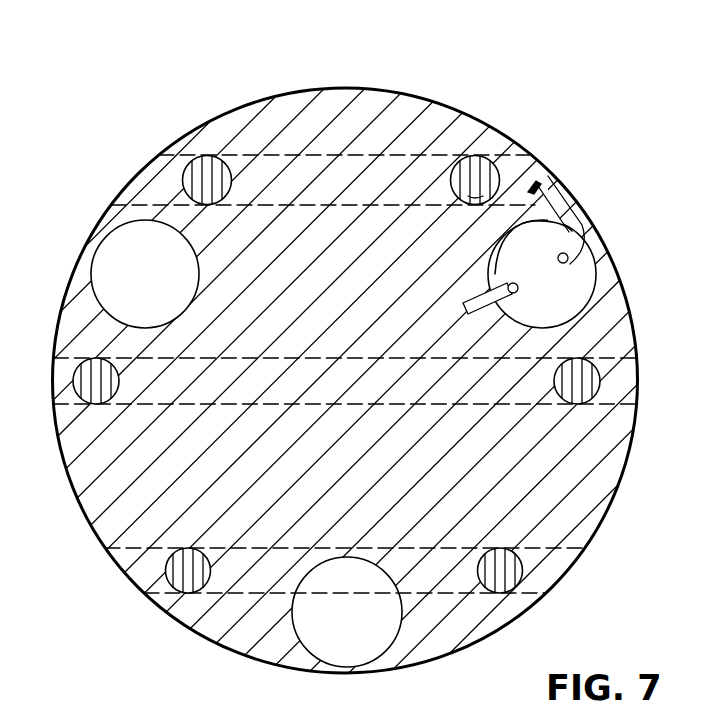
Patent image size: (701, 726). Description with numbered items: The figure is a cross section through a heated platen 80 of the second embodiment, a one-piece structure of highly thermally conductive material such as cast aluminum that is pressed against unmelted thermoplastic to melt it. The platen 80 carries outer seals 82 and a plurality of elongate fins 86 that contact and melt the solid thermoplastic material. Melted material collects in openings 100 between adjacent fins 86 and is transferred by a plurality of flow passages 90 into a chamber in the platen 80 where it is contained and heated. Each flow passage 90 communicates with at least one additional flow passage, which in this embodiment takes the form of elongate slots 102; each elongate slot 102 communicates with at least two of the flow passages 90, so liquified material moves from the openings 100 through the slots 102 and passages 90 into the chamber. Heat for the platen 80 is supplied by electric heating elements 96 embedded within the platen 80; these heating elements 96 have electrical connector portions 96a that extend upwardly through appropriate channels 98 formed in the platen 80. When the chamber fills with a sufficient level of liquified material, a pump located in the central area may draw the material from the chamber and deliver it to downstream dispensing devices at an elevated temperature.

The platen 80 is at (487, 67).
The outer seal 82 is at (144, 284).
The elongate fins 86 is at (483, 180).
The flow passages 90 is at (210, 156).
The electric heating elements 96 is at (575, 196).
The electrical connector portions 96a is at (518, 287).
The channels 98 is at (106, 236).
The openings 100 is at (480, 188).
The elongate slots 102 is at (178, 150).